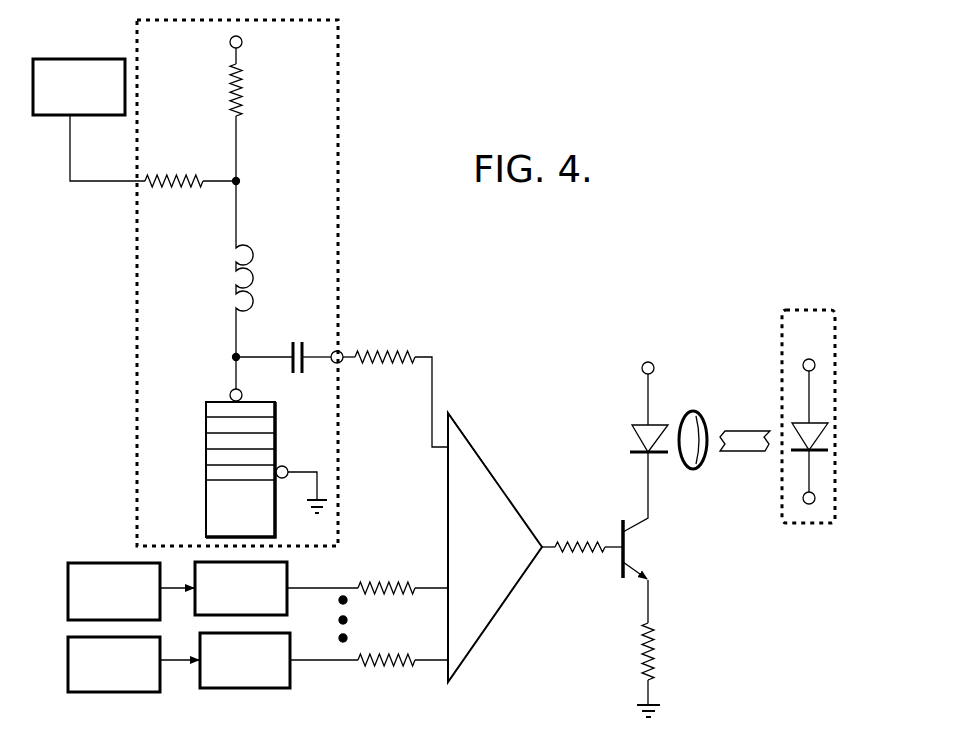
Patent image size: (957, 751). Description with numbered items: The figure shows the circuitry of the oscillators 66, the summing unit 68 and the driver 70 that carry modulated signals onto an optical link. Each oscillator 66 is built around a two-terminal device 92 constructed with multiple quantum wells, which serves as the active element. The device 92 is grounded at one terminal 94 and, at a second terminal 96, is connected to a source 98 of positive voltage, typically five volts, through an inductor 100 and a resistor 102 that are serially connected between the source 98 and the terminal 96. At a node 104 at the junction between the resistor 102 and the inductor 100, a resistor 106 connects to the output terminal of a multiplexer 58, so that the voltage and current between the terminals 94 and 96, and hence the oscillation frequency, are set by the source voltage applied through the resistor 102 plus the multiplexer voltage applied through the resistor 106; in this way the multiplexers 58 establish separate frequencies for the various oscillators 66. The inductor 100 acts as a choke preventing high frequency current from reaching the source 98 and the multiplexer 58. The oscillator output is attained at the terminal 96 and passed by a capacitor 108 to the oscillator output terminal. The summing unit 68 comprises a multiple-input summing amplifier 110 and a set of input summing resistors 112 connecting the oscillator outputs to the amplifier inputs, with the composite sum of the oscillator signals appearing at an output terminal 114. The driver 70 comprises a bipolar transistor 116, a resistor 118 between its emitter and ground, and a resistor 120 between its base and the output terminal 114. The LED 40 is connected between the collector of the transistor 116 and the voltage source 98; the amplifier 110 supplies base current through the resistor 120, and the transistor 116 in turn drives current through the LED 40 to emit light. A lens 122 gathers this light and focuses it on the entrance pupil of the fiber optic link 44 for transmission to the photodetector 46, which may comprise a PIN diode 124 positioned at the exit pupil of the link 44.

The multiplexer 58 is at (70, 60).
The oscillator 66 is at (342, 106).
The source of positive voltage 98 is at (229, 46).
The resistor 102 is at (247, 105).
The node 104 is at (247, 180).
The resistor 106 is at (190, 190).
The inductor 100 is at (254, 255).
The capacitor 108 is at (286, 346).
The second terminal 96 is at (232, 390).
The two-terminal device 92 is at (223, 541).
The terminal 94 is at (287, 466).
The input summing resistors 112 is at (385, 350).
The summing unit 68 is at (484, 656).
The summing amplifier 110 is at (473, 449).
The output terminal 114 is at (543, 548).
The resistor 120 is at (588, 540).
The driver 70 is at (650, 551).
The transistor 116 is at (620, 528).
The resistor 118 is at (655, 633).
The LED 40 is at (655, 427).
The lens 122 is at (707, 461).
The fiber optic link 44 is at (746, 453).
The photodetector 46 is at (808, 521).
The PIN diode 124 is at (800, 425).